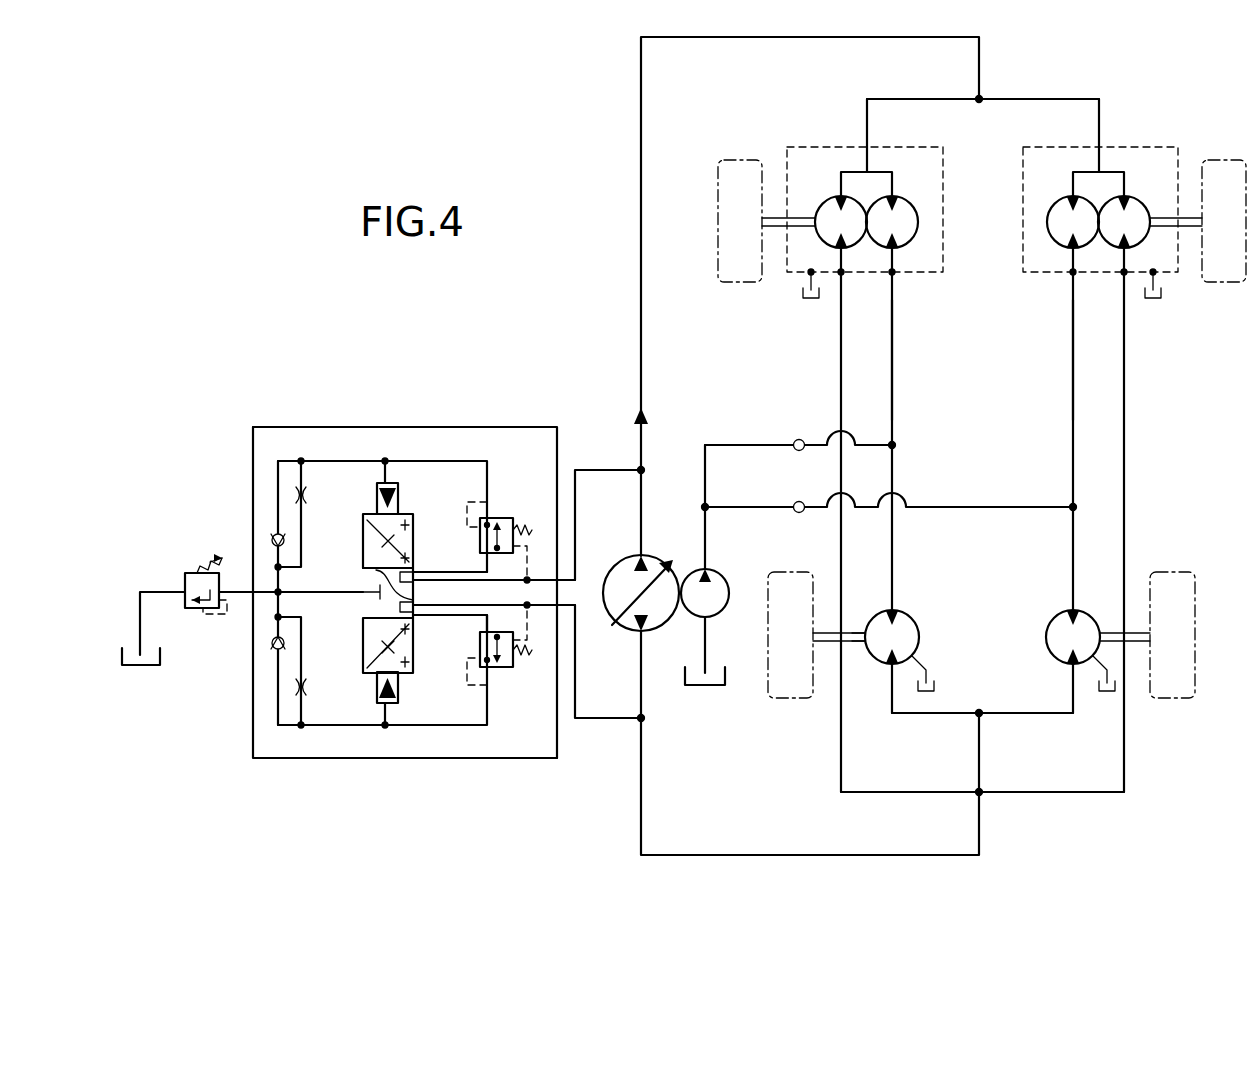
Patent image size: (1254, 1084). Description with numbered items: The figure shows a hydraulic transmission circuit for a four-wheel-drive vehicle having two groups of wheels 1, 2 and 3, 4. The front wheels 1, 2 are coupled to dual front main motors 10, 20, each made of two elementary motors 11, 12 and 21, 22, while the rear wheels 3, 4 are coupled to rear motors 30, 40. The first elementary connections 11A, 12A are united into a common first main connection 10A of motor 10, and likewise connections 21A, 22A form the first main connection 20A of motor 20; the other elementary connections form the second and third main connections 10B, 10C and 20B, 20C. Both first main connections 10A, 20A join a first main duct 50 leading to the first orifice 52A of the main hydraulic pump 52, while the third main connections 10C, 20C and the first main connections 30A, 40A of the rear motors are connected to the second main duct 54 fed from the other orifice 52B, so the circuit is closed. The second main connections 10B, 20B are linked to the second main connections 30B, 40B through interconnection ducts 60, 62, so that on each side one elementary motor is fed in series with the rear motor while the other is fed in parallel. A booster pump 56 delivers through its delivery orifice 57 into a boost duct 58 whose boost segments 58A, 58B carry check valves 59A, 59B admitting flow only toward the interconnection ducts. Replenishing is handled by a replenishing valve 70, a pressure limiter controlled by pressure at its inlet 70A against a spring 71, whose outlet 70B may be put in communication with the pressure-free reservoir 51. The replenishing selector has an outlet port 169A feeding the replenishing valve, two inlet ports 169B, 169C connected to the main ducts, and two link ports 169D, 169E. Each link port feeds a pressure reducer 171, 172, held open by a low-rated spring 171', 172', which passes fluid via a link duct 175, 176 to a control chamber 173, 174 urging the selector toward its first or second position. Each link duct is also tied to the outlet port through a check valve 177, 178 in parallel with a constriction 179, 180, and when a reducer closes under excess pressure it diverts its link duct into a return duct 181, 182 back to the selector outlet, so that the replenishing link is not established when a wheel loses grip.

The wheel 1 is at (740, 170).
The wheel 2 is at (1216, 176).
The wheel 3 is at (796, 695).
The wheel 4 is at (1172, 576).
The front main motor 10 is at (802, 128).
The first main connection 10A is at (868, 160).
The second main connection 10B is at (902, 255).
The third main connection 10C is at (850, 252).
The elementary motor 11 is at (917, 222).
The first elementary connection 11A is at (892, 196).
The elementary motor 12 is at (830, 212).
The first elementary connection 12A is at (836, 196).
The front main motor 20 is at (1124, 146).
The first main connection 20A is at (1094, 160).
The second main connection 20B is at (1064, 255).
The third main connection 20C is at (1112, 255).
The elementary motor 21 is at (1056, 226).
The first elementary connection 21A is at (1062, 200).
The elementary motor 22 is at (1140, 245).
The first elementary connection 22A is at (1118, 196).
The rear motor 30 is at (905, 630).
The first main connection 30A is at (884, 668).
The second main connection 30B is at (898, 612).
The rear motor 40 is at (1060, 630).
The first main connection 40A is at (1064, 666).
The second main connection 40B is at (1066, 612).
The first main duct 50 is at (641, 100).
The pressure-free reservoir 51 is at (712, 690).
The main hydraulic pump 52 is at (654, 560).
The first orifice 52A is at (636, 556).
The second orifice 52B is at (640, 630).
The second main duct 54 is at (795, 855).
The booster pump 56 is at (725, 600).
The delivery orifice 57 is at (708, 568).
The boost duct 58 is at (705, 500).
The boost segment 58A is at (735, 445).
The boost segment 58B is at (775, 507).
The check valve 59A is at (800, 439).
The check valve 59B is at (800, 513).
The interconnection duct 60 is at (896, 368).
The interconnection duct 62 is at (1074, 392).
The replenishing valve 70 is at (186, 580).
The inlet 70A is at (224, 586).
The outlet 70B is at (185, 598).
The spring 71 is at (206, 568).
The outlet port 169A is at (363, 620).
The inlet port 169B is at (363, 580).
The inlet port 169C is at (413, 606).
The link port 169D is at (413, 576).
The link port 169E is at (413, 613).
The first pressure reducer 171 is at (507, 509).
The spring 171' is at (544, 538).
The second pressure reducer 172 is at (504, 682).
The spring 172' is at (544, 660).
The control chamber 173 is at (377, 500).
The control chamber 174 is at (377, 690).
The link duct 175 is at (385, 461).
The link duct 176 is at (418, 726).
The check valve 177 is at (272, 536).
The check valve 178 is at (272, 648).
The constriction 179 is at (295, 495).
The constriction 180 is at (295, 688).
The return duct 181 is at (460, 427).
The return duct 182 is at (506, 758).